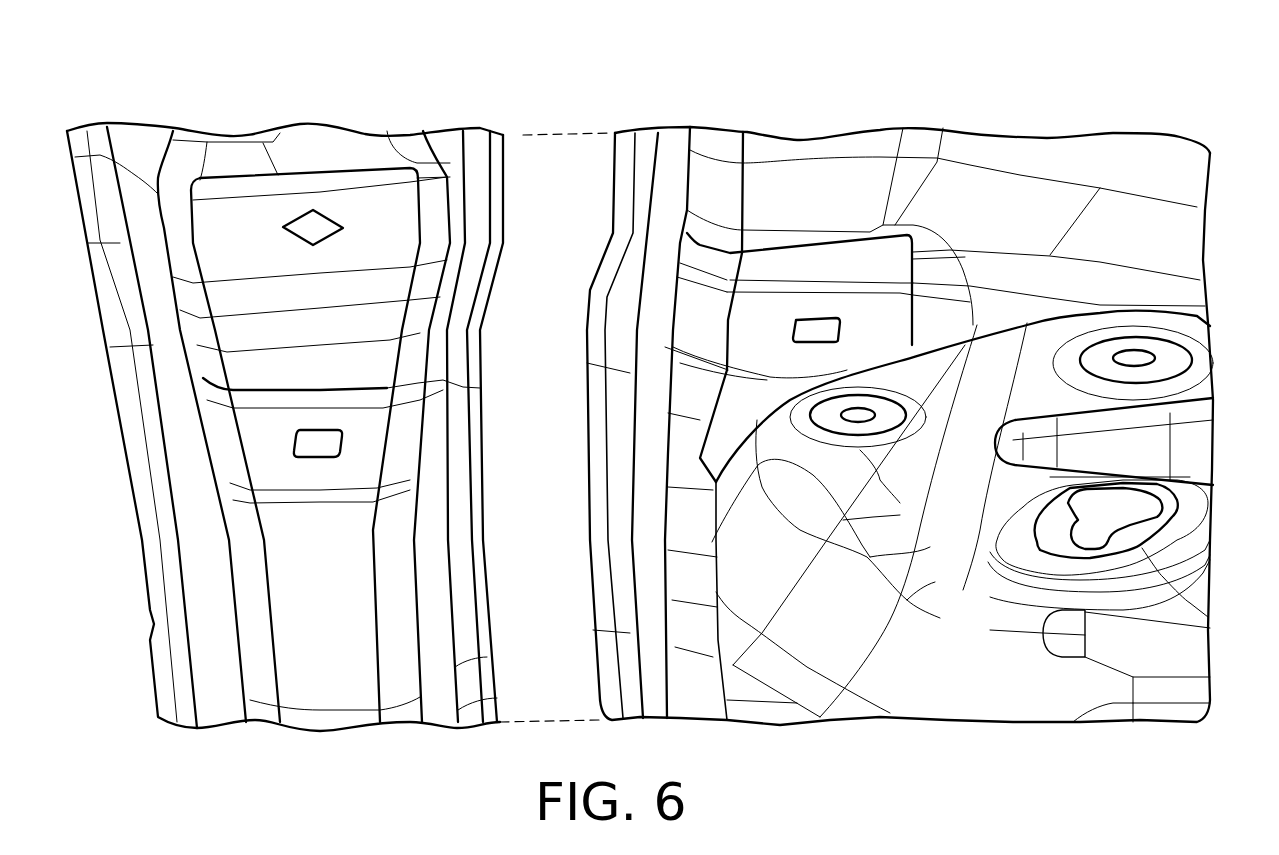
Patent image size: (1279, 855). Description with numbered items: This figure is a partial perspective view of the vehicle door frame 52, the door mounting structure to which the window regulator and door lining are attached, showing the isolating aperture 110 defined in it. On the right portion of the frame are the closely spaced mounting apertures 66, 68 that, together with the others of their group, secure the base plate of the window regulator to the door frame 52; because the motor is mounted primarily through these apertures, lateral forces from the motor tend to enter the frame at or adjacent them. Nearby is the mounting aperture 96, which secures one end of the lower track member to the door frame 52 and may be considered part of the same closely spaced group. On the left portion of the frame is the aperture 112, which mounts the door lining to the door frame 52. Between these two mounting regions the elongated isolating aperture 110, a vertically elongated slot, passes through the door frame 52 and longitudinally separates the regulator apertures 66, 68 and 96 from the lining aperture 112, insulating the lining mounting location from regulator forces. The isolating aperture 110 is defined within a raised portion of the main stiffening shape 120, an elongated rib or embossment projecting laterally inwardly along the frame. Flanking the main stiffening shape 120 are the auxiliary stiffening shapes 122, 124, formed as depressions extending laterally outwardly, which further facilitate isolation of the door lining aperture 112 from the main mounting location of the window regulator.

The isolating aperture 110 is at (532, 153).
The main stiffening shape 120 is at (628, 130).
The auxiliary stiffening shape 122 is at (640, 557).
The auxiliary stiffening shape 124 is at (418, 437).
The aperture 112 is at (322, 458).
The mounting aperture 96 is at (858, 410).
The closely spaced aperture 66 is at (1130, 352).
The closely spaced aperture 68 is at (1165, 512).
The door frame 52 is at (948, 685).